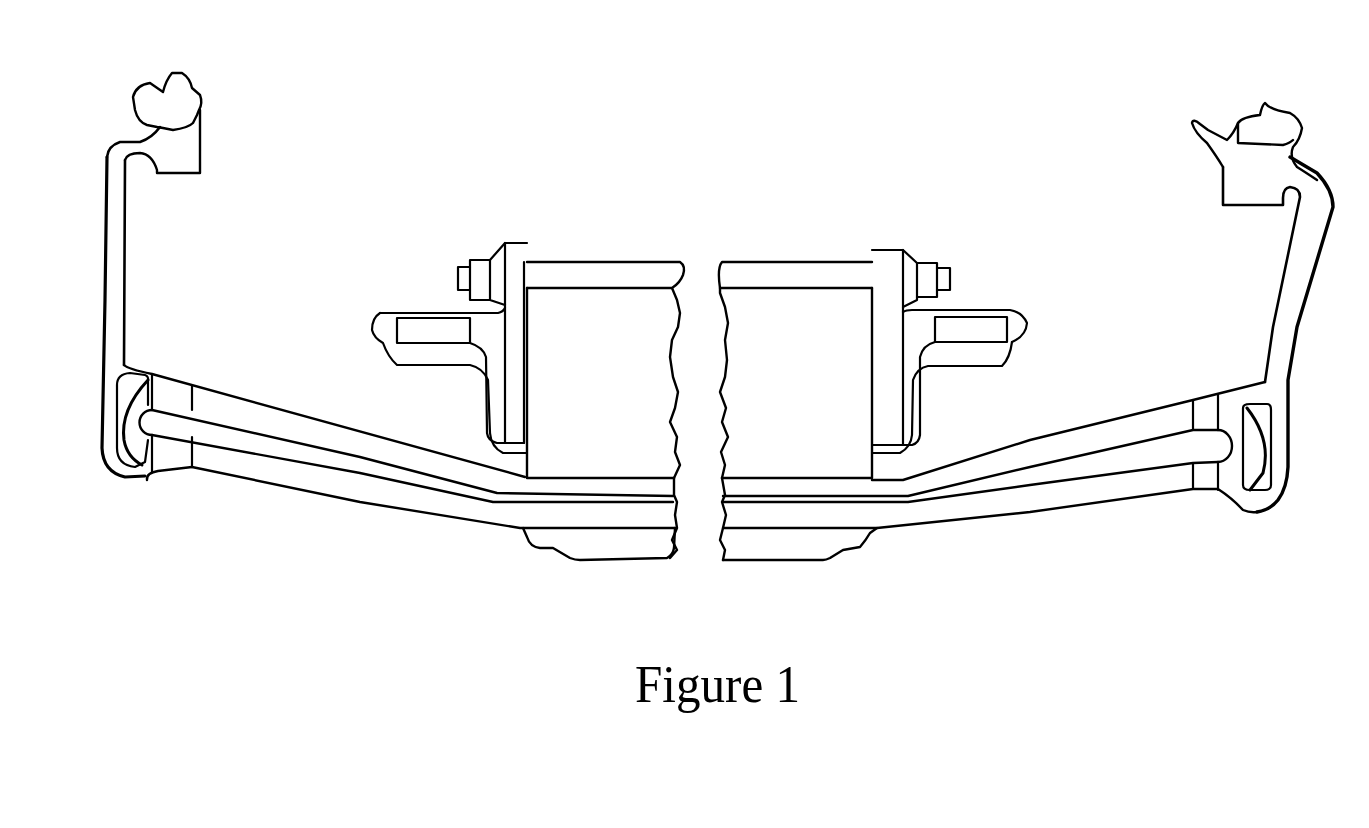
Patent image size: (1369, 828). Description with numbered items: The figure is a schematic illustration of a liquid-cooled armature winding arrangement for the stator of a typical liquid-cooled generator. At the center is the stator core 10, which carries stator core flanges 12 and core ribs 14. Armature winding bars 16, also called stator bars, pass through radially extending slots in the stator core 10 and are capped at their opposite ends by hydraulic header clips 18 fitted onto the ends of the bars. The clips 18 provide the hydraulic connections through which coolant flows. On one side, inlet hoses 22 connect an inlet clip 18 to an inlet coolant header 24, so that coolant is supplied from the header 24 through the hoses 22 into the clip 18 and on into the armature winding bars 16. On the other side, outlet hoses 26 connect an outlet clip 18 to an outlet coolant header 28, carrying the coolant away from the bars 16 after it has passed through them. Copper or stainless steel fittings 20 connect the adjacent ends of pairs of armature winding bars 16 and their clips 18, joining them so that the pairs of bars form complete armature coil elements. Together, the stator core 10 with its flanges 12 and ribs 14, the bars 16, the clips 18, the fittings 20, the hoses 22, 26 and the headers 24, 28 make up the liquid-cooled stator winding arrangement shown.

The stator core 10 is at (742, 542).
The stator core flanges 12 is at (520, 253).
The core ribs 14 is at (795, 259).
The armature winding bars 16 is at (1047, 495).
The hydraulic header clips 18 is at (170, 393).
The fittings 20 is at (130, 423).
The inlet hoses 22 is at (1293, 282).
The inlet coolant header 24 is at (1245, 187).
The outlet hoses 26 is at (107, 267).
The outlet coolant header 28 is at (191, 152).